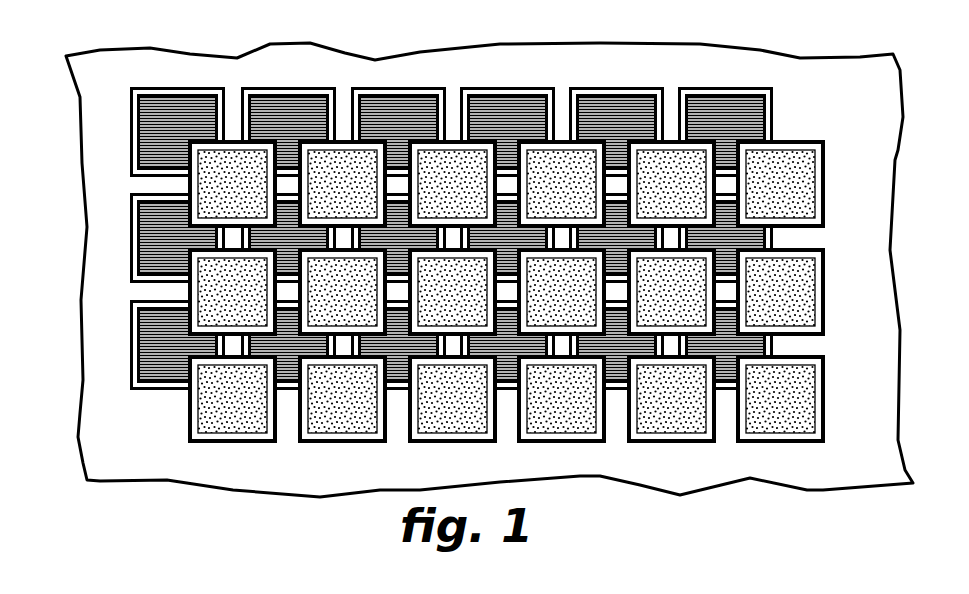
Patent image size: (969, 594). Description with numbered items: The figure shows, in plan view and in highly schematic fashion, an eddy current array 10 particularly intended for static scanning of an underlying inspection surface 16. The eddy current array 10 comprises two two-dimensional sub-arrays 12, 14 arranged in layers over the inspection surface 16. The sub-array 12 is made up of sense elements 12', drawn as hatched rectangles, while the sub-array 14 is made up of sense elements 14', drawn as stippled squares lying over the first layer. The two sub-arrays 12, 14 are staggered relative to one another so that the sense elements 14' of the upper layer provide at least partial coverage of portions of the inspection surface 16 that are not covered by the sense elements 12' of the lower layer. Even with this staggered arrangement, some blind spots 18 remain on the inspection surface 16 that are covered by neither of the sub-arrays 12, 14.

The eddy current array 10 is at (468, 310).
The sub-array 12 is at (403, 283).
The sense elements 12' is at (256, 112).
The sub-array 14 is at (486, 360).
The sense elements 14' is at (807, 238).
The inspection surface 16 is at (872, 99).
The blind spots 18 is at (617, 177).